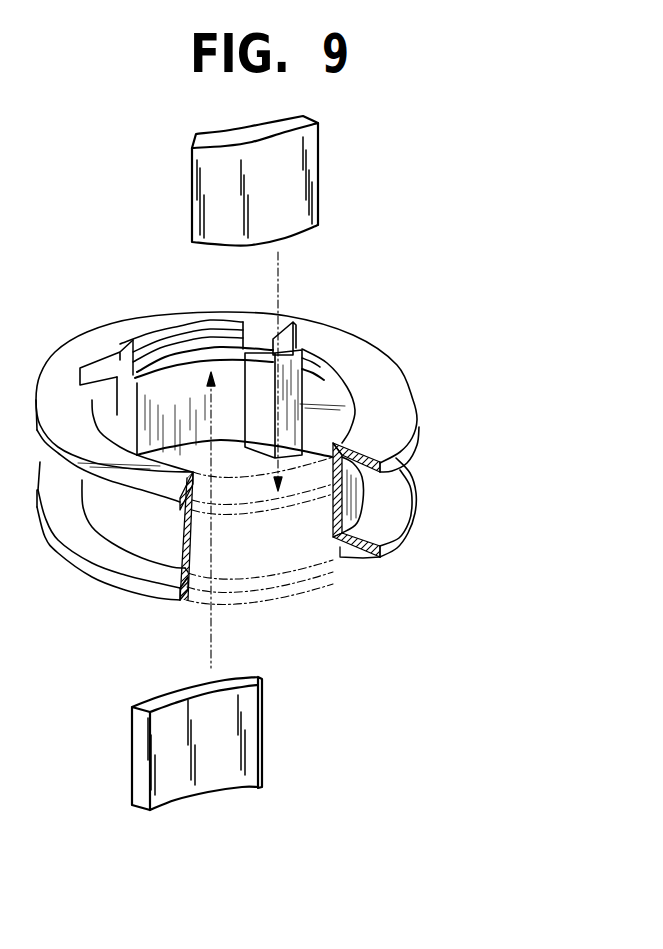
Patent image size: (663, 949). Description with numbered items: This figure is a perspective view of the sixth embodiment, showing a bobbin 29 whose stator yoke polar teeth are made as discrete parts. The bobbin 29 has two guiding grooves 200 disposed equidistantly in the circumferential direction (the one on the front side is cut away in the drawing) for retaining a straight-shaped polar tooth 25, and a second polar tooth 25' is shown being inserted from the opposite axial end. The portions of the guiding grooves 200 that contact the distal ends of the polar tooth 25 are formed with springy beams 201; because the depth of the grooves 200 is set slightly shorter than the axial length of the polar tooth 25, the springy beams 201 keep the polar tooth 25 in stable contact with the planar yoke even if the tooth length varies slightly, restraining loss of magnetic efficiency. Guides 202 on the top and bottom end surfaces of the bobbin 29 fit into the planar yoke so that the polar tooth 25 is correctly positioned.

The polar tooth 25 is at (244, 743).
The polar tooth 25' is at (298, 181).
The bobbin 29 is at (347, 319).
The guiding groove 200 is at (128, 341).
The springy beam 201 is at (210, 355).
The guide 202 is at (82, 330).